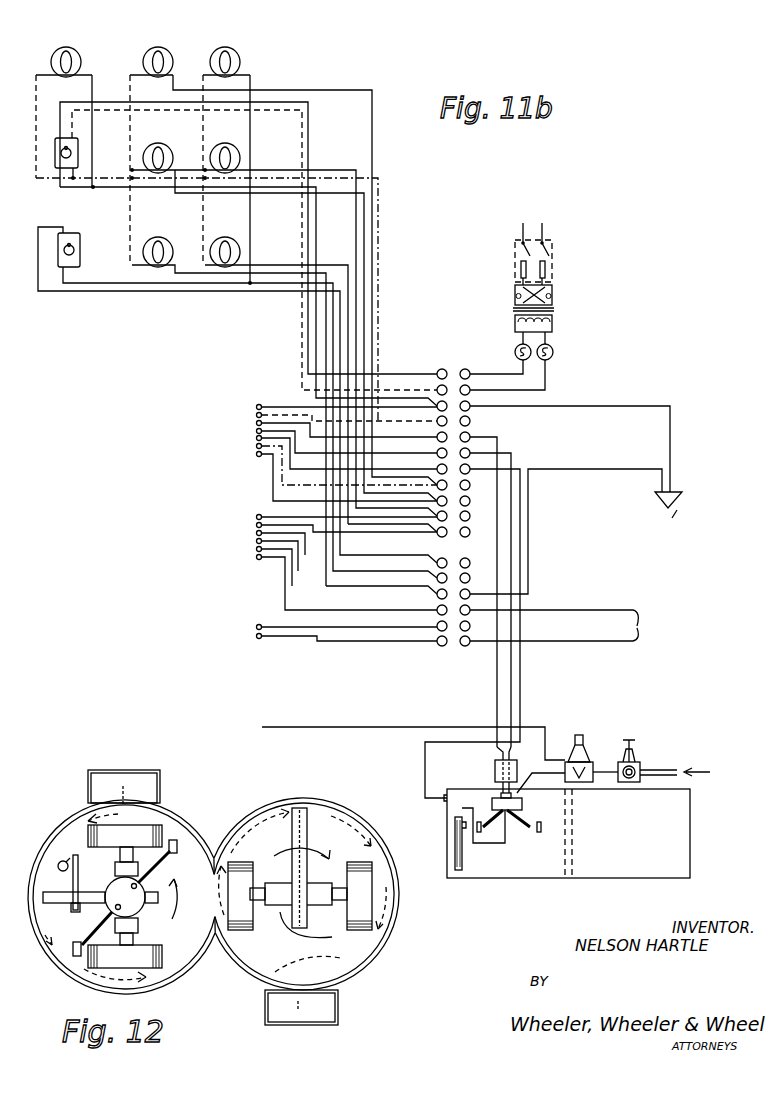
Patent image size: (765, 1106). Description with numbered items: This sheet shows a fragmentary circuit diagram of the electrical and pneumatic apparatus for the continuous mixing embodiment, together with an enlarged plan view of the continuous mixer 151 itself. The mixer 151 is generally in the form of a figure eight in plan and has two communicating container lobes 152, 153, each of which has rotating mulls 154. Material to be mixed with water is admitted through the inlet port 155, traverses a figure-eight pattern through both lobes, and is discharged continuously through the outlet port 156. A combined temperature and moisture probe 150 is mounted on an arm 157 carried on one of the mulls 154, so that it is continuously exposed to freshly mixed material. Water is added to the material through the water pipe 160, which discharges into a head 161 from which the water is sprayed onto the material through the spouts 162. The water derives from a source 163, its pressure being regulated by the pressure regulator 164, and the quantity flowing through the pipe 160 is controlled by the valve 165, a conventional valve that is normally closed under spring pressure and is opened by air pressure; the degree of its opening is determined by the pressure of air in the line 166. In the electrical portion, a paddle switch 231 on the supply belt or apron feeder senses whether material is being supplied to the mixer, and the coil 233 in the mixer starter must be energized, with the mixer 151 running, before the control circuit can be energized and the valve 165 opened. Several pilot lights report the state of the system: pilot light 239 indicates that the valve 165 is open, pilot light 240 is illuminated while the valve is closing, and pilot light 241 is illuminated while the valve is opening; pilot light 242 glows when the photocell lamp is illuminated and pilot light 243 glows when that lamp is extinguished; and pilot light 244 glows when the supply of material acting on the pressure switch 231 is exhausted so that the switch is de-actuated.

In FIG. 11B, the pilot light 239 is at (237, 60).
In FIG. 11B, the pilot light 240 is at (241, 155).
In FIG. 11B, the pilot light 241 is at (240, 250).
In FIG. 11B, the pilot light 242 is at (166, 58).
In FIG. 11B, the pilot light 243 is at (166, 148).
In FIG. 11B, the pilot light 244 is at (167, 243).
In FIG. 11B, the paddle switch 231 is at (680, 496).
In FIG. 11B, the coil 233 is at (638, 627).
In FIG. 11B, the air line 166 is at (540, 728).
In FIG. 11B, the valve 165 is at (594, 760).
In FIG. 11B, the pressure regulator 164 is at (634, 762).
In FIG. 11B, the water source 163 is at (664, 771).
In FIG. 11B, the water pipe 160 is at (524, 778).
In FIG. 11B, the head 161 is at (492, 801).
In FIG. 12, the head 161 is at (116, 889).
In FIG. 11B, the spouts 162 is at (524, 828).
In FIG. 12, the spouts 162 is at (165, 857).
In FIG. 11B, the combined temperature and moisture probe 150 is at (455, 848).
In FIG. 12, the combined temperature and moisture probe 150 is at (59, 864).
In FIG. 11B, the continuous mixer 151 is at (543, 858).
In FIG. 12, the continuous mixer 151 is at (255, 802).
In FIG. 11B, the container lobe 152 is at (500, 870).
In FIG. 12, the container lobe 152 is at (171, 808).
In FIG. 11B, the container lobe 153 is at (642, 866).
In FIG. 12, the container lobe 153 is at (345, 792).
In FIG. 12, the mulls 154 is at (107, 957).
In FIG. 12, the inlet port 155 is at (105, 786).
In FIG. 12, the outlet port 156 is at (283, 1010).
In FIG. 12, the arm 157 is at (84, 878).